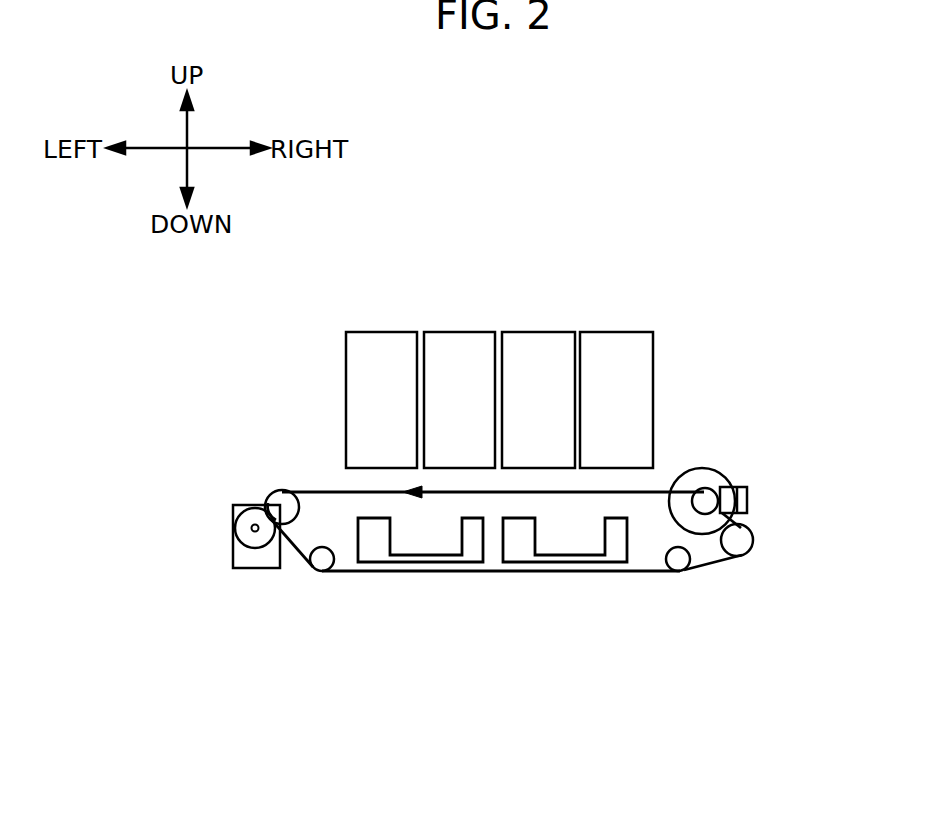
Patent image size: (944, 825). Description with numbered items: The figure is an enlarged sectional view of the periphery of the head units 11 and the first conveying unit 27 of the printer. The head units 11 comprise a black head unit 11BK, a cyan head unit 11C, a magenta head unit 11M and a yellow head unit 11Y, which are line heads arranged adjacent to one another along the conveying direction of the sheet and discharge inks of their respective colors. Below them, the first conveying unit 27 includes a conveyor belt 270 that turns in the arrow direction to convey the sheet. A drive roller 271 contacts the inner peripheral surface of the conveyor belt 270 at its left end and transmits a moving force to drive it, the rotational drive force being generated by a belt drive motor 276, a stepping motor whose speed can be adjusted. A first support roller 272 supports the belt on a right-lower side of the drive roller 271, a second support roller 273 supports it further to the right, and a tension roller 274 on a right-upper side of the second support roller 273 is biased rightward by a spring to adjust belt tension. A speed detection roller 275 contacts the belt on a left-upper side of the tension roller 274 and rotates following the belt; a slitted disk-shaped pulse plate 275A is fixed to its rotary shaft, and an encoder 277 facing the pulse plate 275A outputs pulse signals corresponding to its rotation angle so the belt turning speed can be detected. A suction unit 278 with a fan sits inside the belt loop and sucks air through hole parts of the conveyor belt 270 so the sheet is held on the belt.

The head units 11 is at (678, 259).
The black head unit 11BK is at (372, 332).
The cyan head unit 11C is at (463, 332).
The magenta head unit 11M is at (535, 332).
The yellow head unit 11Y is at (625, 332).
The first conveying unit 27 is at (512, 675).
The conveyor belt 270 is at (570, 572).
The drive roller 271 is at (285, 501).
The first support roller 272 is at (318, 570).
The second support roller 273 is at (679, 571).
The tension roller 274 is at (740, 552).
The speed detection roller 275 is at (720, 451).
The pulse plate 275A is at (700, 467).
The belt drive motor 276 is at (230, 555).
The encoder 277 is at (748, 497).
The suction unit 278 is at (520, 553).